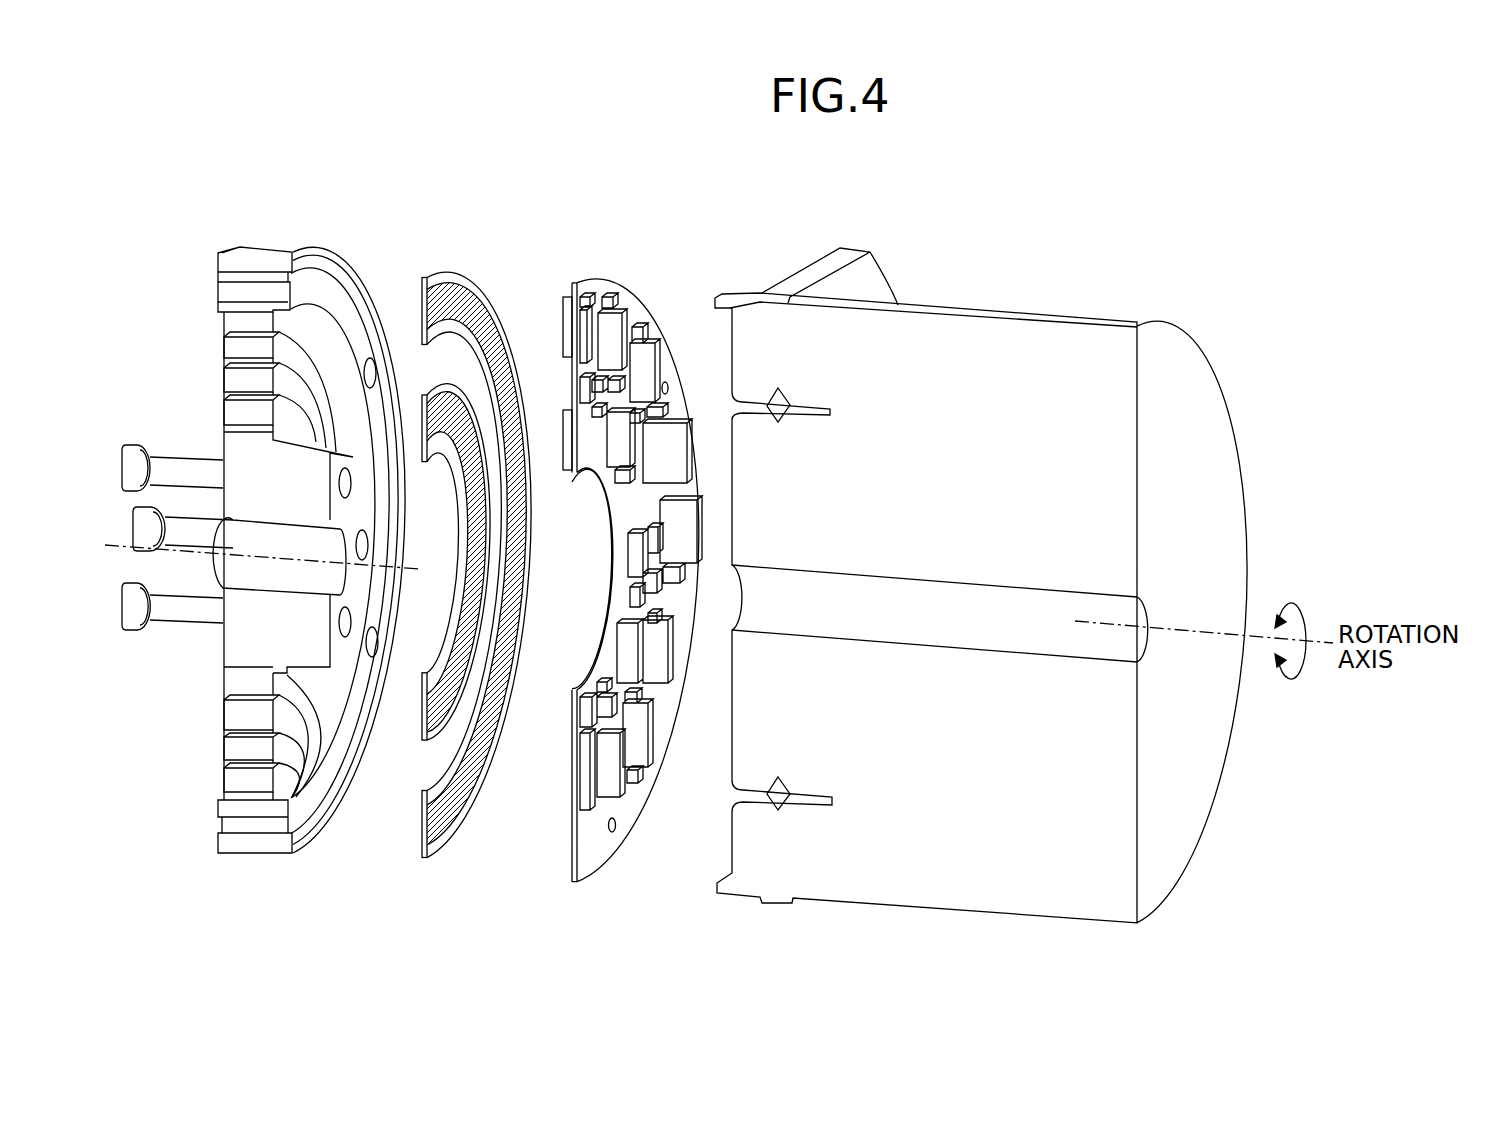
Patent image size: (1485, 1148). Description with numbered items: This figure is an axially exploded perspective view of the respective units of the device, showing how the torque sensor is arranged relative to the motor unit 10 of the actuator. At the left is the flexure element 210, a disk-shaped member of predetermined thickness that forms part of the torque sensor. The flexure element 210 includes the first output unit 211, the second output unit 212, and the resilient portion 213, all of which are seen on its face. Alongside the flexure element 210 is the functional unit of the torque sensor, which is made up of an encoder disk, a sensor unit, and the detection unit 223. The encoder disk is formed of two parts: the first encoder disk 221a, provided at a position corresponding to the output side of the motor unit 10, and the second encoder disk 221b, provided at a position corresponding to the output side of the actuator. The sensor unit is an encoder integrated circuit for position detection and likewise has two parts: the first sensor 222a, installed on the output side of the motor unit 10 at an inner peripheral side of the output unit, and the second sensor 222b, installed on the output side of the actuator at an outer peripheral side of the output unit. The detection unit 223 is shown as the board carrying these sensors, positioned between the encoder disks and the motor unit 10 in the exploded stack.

The motor unit 10 is at (1002, 325).
The flexure element 210 is at (262, 255).
The first output unit 211 is at (232, 446).
The second output unit 212 is at (228, 262).
The resilient portion 213 is at (235, 410).
The first encoder disk 221a is at (425, 393).
The second encoder disk 221b is at (450, 272).
The first sensor 222a is at (563, 410).
The second sensor 222b is at (566, 297).
The detection unit 223 is at (608, 280).